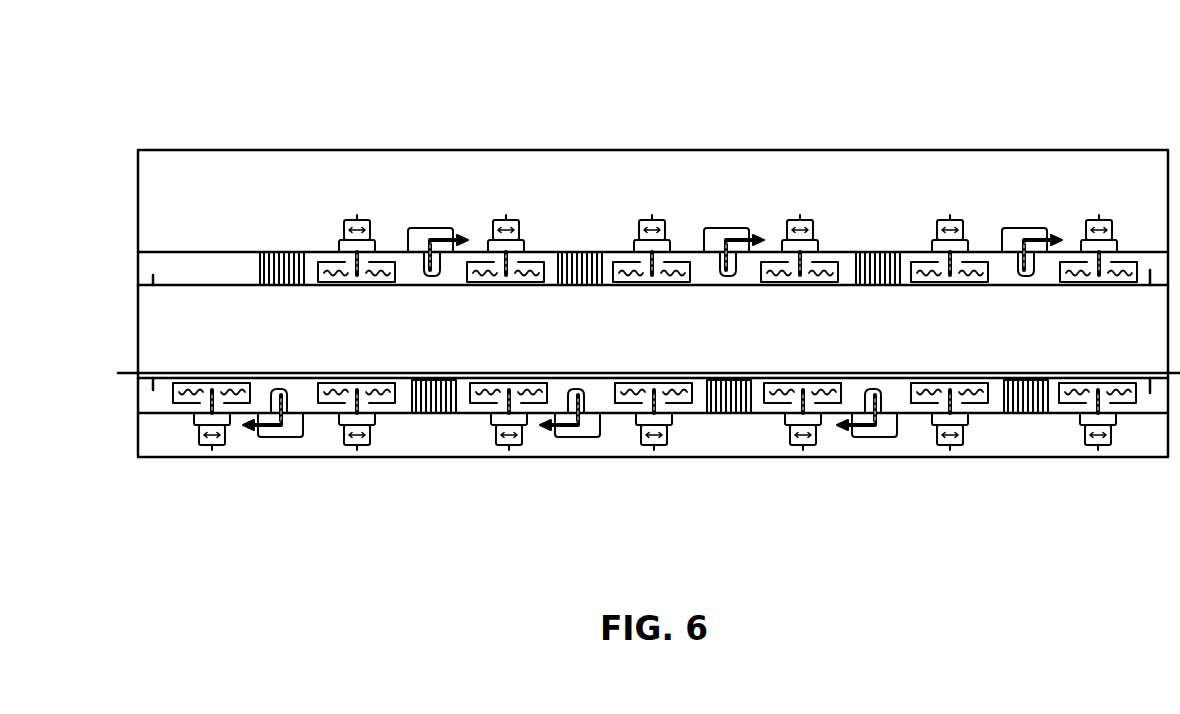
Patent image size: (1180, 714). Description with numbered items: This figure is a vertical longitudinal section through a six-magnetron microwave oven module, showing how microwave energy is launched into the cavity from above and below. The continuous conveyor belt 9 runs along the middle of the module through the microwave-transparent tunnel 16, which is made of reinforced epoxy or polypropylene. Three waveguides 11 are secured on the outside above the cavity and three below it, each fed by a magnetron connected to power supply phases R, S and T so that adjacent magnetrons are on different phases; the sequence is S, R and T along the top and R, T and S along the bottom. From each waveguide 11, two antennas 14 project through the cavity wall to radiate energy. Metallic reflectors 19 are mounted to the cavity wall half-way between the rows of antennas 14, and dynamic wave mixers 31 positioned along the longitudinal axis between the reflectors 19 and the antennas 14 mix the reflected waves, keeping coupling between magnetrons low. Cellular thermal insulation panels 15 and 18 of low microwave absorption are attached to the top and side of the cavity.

The conveyor belt 9 is at (300, 373).
The waveguide 11 is at (958, 565).
The antenna 14 is at (877, 392).
The thermal insulation panel 15 is at (213, 268).
The tunnel 16 is at (490, 375).
The thermal insulation panel 18 is at (160, 408).
The metallic reflector 19 is at (283, 252).
The dynamic wave mixer 31 is at (627, 268).